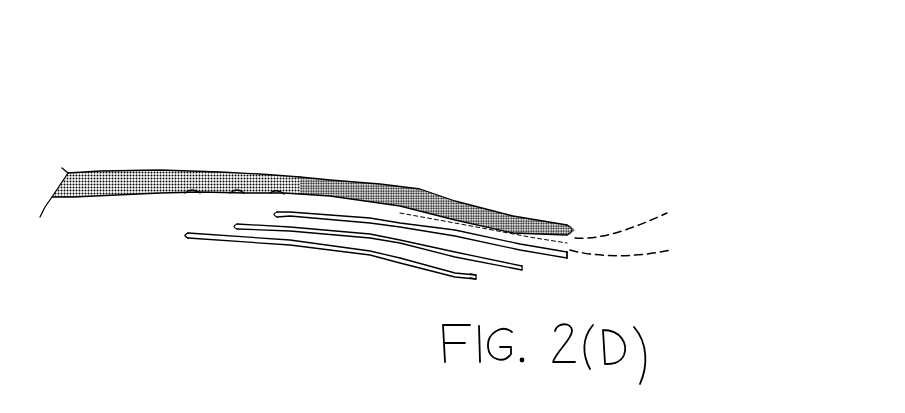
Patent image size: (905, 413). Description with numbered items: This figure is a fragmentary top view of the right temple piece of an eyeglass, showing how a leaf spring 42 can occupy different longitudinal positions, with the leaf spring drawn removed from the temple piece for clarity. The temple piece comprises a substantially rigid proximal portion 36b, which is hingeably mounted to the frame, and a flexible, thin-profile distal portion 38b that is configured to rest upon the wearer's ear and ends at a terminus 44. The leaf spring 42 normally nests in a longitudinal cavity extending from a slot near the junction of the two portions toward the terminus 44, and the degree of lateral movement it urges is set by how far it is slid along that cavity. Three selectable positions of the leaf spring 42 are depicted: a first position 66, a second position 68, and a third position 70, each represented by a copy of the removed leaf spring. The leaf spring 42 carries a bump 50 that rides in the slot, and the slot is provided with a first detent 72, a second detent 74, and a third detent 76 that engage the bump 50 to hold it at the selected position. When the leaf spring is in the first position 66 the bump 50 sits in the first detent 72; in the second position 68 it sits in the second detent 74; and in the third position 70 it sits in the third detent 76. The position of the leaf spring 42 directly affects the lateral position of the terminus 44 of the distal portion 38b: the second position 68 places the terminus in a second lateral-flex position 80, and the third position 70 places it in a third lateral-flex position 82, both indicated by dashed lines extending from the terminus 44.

The proximal portion 36b is at (163, 175).
The distal portion 38b is at (341, 181).
The terminus 44 is at (571, 226).
The second lateral-flex position 80 is at (635, 219).
The third lateral-flex position 82 is at (642, 253).
The first detent 72 is at (190, 193).
The second detent 74 is at (233, 193).
The third detent 76 is at (273, 194).
The leaf spring 42 is at (392, 227).
The bump 50 is at (191, 240).
The first position 66 is at (476, 278).
The second position 68 is at (523, 269).
The third position 70 is at (538, 260).